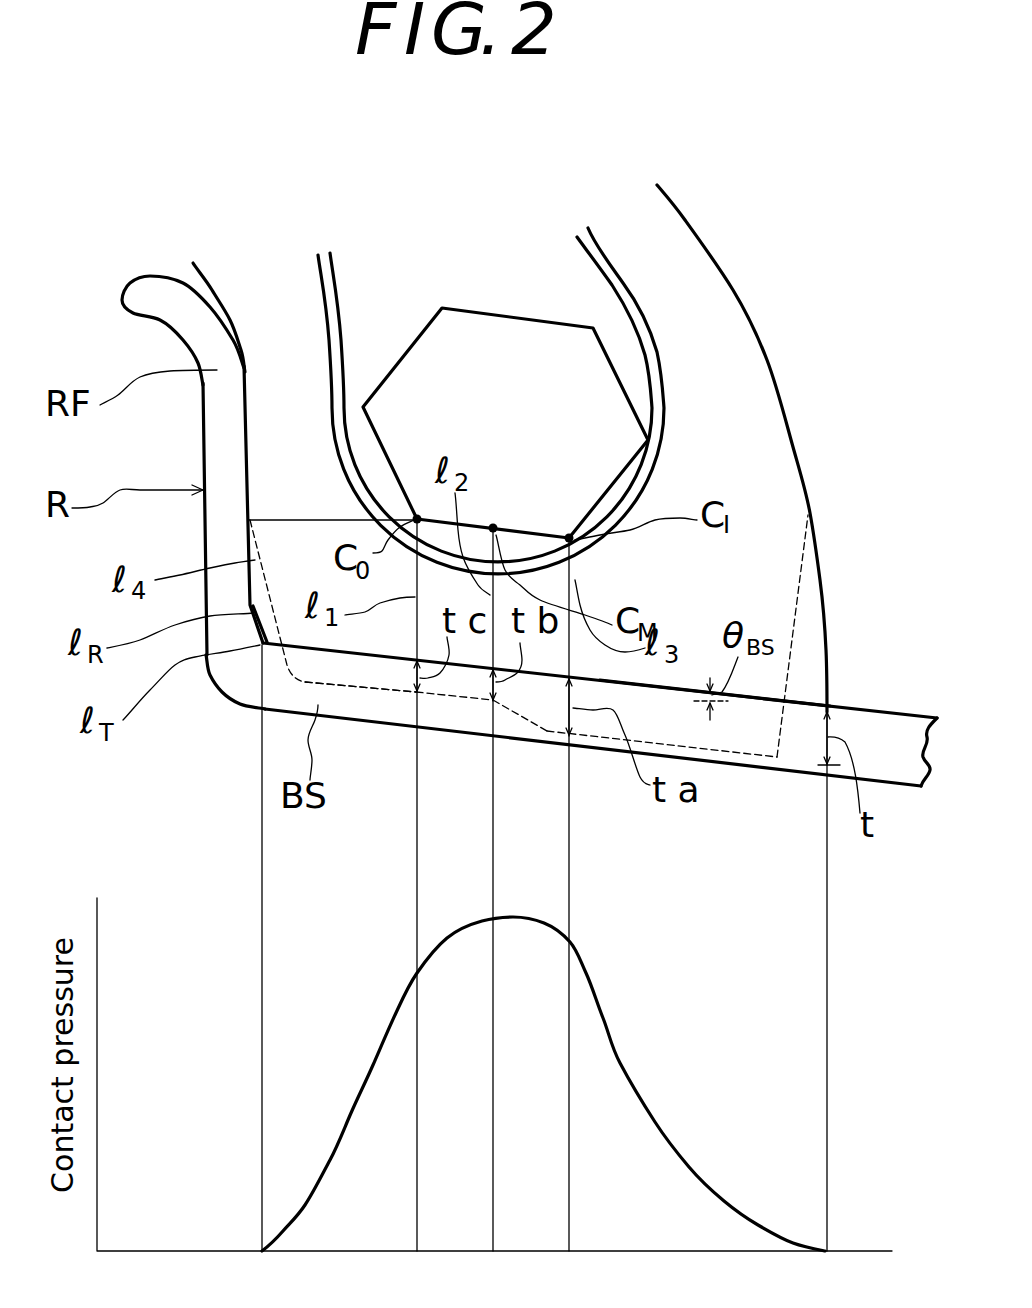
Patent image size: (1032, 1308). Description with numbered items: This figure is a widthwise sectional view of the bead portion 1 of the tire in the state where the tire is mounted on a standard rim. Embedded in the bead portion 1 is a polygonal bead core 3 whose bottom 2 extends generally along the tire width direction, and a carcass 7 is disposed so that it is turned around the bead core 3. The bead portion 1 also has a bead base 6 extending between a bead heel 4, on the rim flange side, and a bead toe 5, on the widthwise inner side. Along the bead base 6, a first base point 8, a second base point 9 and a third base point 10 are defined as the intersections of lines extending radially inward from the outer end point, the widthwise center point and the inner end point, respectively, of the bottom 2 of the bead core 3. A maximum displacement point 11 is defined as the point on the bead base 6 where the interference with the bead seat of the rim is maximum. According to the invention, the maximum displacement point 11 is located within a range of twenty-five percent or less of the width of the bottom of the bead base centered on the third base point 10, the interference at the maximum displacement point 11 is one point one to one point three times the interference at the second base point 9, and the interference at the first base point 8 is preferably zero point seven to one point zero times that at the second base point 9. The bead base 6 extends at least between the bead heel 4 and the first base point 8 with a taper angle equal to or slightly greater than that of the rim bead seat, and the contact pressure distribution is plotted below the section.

The bead portion 1 is at (737, 287).
The bottom 2 is at (505, 560).
The bead core 3 is at (585, 403).
The bead heel 4 is at (262, 646).
The bead toe 5 is at (828, 711).
The bead base 6 is at (684, 692).
The carcass 7 is at (615, 265).
The first base point 8 is at (416, 692).
The second base point 9 is at (493, 703).
The third base point 10 is at (570, 736).
The maximum displacement point 11 is at (552, 725).